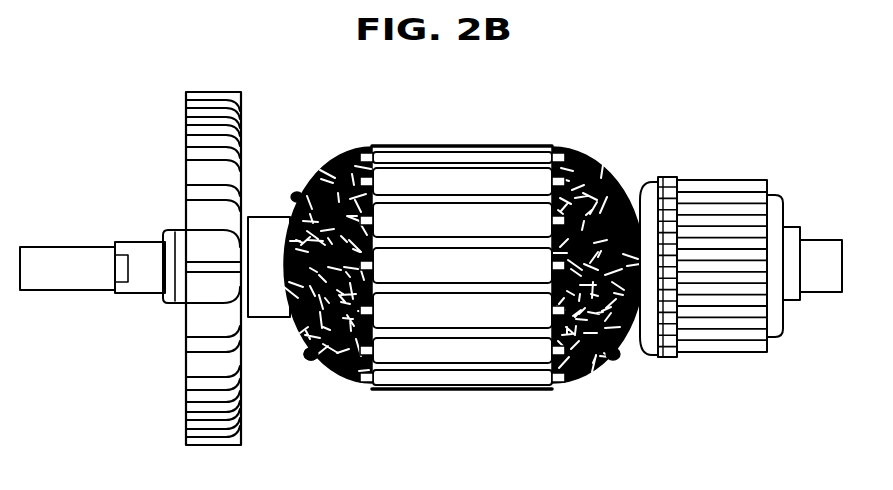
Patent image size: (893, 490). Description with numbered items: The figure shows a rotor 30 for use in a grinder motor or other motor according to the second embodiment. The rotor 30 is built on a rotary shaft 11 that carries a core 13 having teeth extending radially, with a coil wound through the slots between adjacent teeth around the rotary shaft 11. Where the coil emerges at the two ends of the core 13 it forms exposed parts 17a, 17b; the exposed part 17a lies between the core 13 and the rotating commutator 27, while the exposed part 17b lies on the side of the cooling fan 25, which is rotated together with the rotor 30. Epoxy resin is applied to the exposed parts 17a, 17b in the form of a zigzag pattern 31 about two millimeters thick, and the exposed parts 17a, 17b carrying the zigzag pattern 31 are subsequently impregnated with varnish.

The rotor 30 is at (731, 92).
The rotary shaft 11 is at (78, 272).
The cooling fan 25 is at (205, 167).
The core 13 is at (460, 146).
The exposed part of coil 17a is at (653, 120).
The exposed part of coil 17b is at (370, 120).
The commutator 27 is at (735, 195).
The zigzag pattern 31 is at (322, 368).